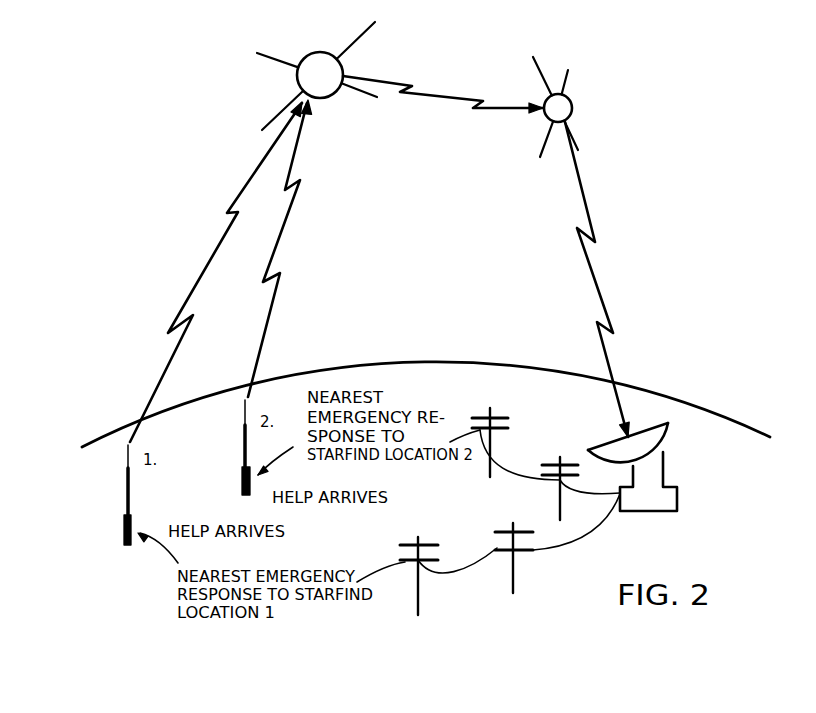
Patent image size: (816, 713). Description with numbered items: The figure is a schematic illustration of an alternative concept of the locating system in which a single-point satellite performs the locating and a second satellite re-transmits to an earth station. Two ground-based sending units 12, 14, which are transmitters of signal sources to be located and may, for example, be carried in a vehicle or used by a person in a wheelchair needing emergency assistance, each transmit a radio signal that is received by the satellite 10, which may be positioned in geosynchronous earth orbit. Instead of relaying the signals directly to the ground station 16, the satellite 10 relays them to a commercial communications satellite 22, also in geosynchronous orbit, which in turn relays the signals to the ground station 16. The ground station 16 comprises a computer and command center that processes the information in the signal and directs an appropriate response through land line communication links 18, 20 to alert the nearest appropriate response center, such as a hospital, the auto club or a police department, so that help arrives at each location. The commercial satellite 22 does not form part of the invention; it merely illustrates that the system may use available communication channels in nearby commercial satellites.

The satellite 10 is at (308, 50).
The commercial communications satellite 22 is at (572, 112).
The sending unit 12 is at (122, 528).
The sending unit 14 is at (240, 483).
The ground station 16 is at (663, 472).
The land line communication link 18 is at (515, 570).
The land line communication link 20 is at (493, 445).